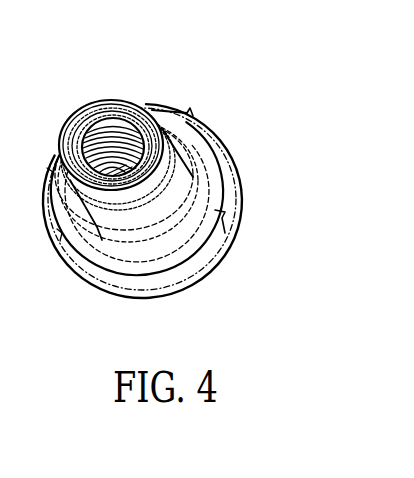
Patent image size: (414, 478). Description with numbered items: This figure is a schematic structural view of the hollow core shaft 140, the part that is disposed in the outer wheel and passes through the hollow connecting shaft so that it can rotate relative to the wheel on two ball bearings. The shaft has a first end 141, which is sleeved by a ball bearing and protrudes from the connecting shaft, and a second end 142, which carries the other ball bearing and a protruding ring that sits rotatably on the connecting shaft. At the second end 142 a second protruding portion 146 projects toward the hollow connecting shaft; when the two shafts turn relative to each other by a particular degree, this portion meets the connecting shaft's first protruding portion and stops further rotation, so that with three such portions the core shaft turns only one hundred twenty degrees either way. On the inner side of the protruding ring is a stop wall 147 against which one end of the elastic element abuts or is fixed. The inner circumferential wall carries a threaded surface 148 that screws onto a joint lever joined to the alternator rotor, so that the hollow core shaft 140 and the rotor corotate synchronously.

The hollow core shaft 140 is at (159, 197).
The first end 141 is at (53, 170).
The second end 142 is at (186, 283).
The second protruding portion 146 is at (221, 226).
The stop wall 147 is at (177, 104).
The threaded surface 148 is at (98, 120).